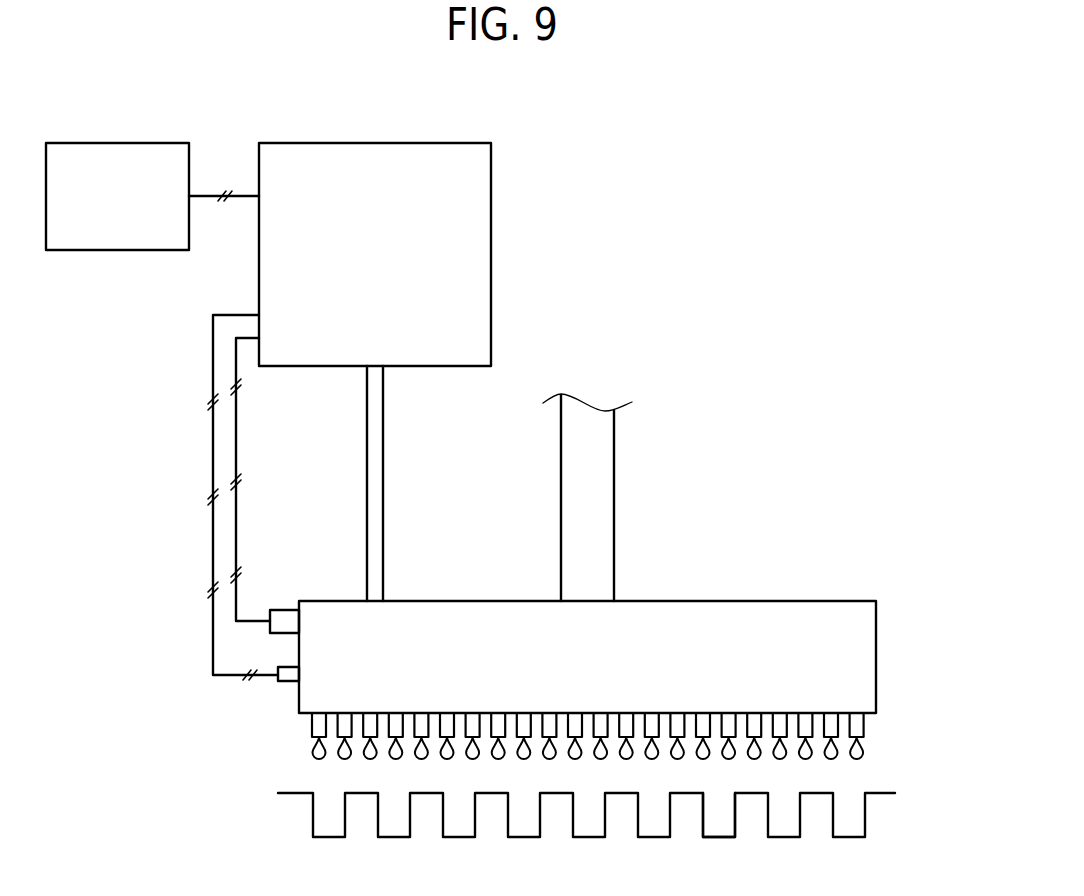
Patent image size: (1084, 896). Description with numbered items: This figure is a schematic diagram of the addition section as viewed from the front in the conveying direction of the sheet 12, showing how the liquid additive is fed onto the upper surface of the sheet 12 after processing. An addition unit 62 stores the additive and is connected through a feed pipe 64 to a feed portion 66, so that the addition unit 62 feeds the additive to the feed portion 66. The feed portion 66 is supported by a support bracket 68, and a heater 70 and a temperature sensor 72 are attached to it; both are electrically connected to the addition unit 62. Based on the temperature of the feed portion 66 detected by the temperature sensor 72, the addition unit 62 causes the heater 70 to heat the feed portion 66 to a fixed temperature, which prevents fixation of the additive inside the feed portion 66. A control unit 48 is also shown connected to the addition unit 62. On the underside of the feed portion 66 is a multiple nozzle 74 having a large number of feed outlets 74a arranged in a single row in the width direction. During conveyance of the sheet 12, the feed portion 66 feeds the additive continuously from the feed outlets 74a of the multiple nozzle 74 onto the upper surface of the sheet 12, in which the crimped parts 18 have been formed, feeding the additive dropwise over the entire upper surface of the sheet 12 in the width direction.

The control unit 48 is at (148, 142).
The addition unit 62 is at (449, 142).
The feed pipe 64 is at (385, 474).
The support bracket 68 is at (616, 474).
The feed portion 66 is at (878, 621).
The heater 70 is at (283, 608).
The temperature sensor 72 is at (290, 683).
The multiple nozzle 74 is at (878, 727).
The feed outlets 74a is at (730, 744).
The sheet 12 is at (879, 790).
The crimped parts 18 is at (718, 838).